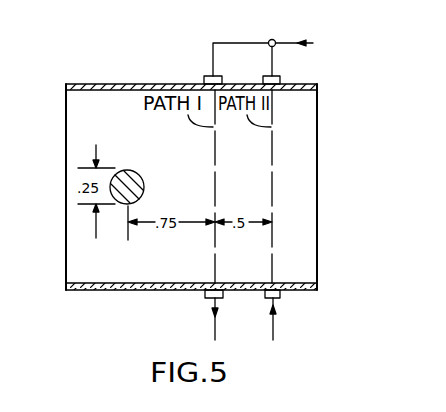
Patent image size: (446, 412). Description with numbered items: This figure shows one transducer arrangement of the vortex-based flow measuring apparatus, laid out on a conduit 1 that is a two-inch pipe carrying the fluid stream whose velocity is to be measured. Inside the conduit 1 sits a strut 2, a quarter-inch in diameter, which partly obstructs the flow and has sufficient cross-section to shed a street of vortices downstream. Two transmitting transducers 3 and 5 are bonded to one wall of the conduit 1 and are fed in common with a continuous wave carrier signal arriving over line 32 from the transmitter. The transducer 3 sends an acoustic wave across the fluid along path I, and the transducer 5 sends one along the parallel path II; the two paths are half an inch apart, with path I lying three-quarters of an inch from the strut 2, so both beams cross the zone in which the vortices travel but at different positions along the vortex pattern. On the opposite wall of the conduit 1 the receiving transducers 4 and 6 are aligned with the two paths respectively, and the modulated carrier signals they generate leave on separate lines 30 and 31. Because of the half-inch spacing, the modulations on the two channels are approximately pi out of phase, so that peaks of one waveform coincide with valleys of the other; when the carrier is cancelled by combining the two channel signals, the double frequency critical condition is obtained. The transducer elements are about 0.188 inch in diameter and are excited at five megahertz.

The conduit 1 is at (296, 86).
The strut 2 is at (138, 157).
The transmitting transducer 3 is at (204, 77).
The receiving transducer 4 is at (206, 298).
The transmitting transducer 5 is at (264, 77).
The receiving transducer 6 is at (279, 298).
The line 30 is at (213, 321).
The line 31 is at (273, 322).
The line 32 is at (289, 43).